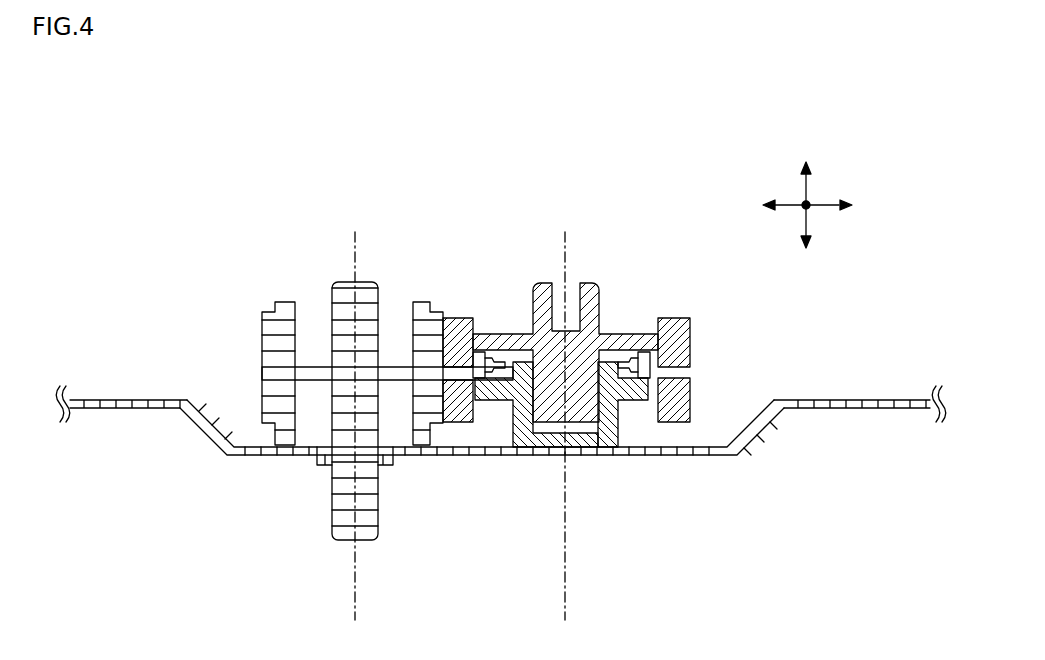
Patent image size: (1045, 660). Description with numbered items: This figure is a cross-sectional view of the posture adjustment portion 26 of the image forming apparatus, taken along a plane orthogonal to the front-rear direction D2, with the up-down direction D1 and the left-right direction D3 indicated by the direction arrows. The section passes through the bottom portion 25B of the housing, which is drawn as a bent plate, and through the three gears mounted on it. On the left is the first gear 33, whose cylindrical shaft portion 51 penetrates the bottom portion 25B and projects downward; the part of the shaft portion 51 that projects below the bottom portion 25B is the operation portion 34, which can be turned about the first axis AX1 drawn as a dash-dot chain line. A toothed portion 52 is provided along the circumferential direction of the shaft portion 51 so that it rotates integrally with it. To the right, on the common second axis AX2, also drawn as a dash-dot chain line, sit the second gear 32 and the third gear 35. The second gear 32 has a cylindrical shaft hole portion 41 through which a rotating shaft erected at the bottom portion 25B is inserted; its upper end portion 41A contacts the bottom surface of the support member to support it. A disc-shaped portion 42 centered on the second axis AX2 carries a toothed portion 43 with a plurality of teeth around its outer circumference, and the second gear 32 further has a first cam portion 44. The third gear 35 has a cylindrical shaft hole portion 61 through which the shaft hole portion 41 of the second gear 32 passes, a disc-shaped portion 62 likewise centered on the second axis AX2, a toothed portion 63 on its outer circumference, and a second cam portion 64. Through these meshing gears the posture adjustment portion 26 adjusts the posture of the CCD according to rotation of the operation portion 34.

The posture adjustment portion 26 is at (150, 162).
The bottom portion 25B is at (110, 398).
The second gear 32 is at (480, 278).
The first gear 33 is at (337, 253).
The operation portion 34 is at (332, 510).
The third gear 35 is at (703, 425).
The shaft hole portion 41 is at (587, 428).
The end portion 41A is at (590, 282).
The disc-shaped portion 42 is at (640, 334).
The toothed portion 43 is at (690, 330).
The first cam portion 44 is at (478, 400).
The shaft portion 51 is at (332, 292).
The toothed portion 52 is at (262, 342).
The shaft hole portion 61 is at (513, 433).
The disc-shaped portion 62 is at (645, 400).
The toothed portion 63 is at (690, 386).
The second cam portion 64 is at (495, 355).
The first axis AX1 is at (355, 588).
The second axis AX2 is at (565, 588).
The up-down direction D1 is at (807, 190).
The front-rear direction D2 is at (800, 207).
The left-right direction D3 is at (818, 208).